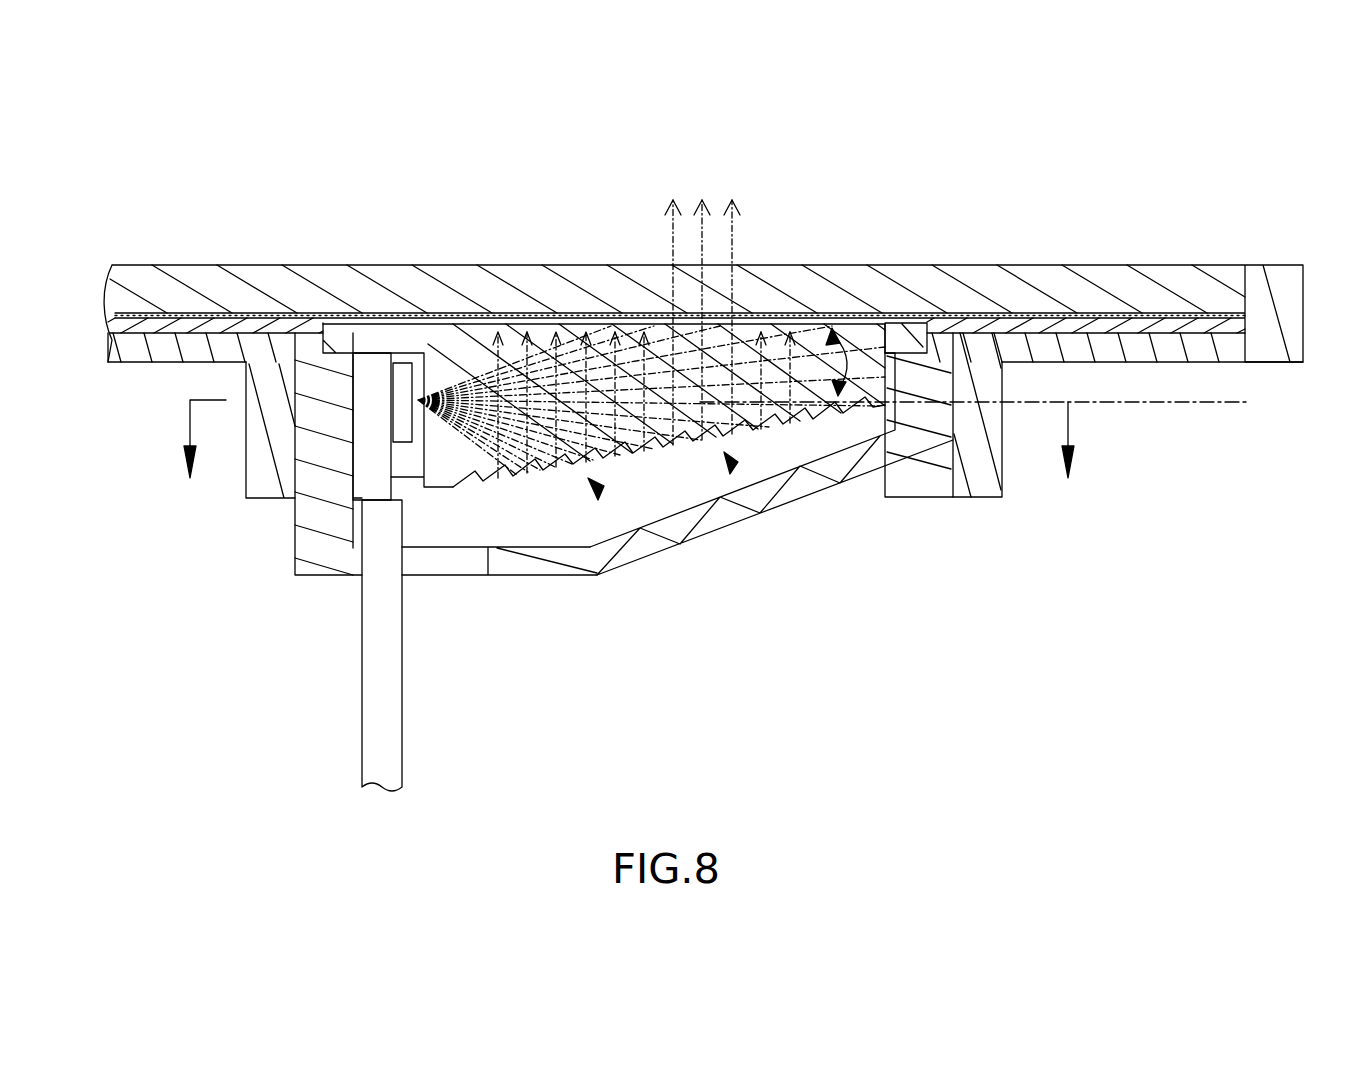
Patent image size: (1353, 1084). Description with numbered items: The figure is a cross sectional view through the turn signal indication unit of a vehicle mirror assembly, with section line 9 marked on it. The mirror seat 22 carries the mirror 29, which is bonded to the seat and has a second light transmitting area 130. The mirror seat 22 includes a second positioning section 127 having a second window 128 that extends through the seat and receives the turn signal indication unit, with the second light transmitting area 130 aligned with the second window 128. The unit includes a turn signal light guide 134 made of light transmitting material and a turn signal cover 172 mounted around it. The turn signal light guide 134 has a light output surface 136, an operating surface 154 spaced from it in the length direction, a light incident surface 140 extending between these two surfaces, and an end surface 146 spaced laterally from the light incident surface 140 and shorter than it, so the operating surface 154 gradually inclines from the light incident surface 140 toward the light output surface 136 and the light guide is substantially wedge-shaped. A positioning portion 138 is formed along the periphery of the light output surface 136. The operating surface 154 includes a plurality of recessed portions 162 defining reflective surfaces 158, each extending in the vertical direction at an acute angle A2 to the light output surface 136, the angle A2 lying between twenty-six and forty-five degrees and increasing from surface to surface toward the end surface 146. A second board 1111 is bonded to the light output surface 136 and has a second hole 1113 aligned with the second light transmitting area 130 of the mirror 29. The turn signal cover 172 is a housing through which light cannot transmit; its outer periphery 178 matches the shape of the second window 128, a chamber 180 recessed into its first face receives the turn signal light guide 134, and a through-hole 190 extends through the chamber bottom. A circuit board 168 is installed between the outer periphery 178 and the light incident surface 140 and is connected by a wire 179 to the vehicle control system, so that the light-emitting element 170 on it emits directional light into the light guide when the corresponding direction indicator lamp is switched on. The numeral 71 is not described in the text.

The mirror 29 is at (1150, 282).
The second board 1111 is at (297, 316).
The mirror seat 22 is at (130, 340).
The rear plate 71 is at (1197, 404).
The second positioning section 127 is at (258, 482).
The outer periphery 178 is at (312, 578).
The wire 179 is at (392, 755).
The through-hole 190 is at (360, 580).
The circuit board 168 is at (362, 355).
The light-emitting element 170 is at (400, 368).
The light incident surface 140 is at (425, 482).
The turn signal light guide 134 is at (592, 500).
The second hole 1113 is at (720, 322).
The second light transmitting area 130 is at (655, 322).
The light output surface 136 is at (800, 322).
The positioning portion 138 is at (905, 326).
The acute angle A2 is at (848, 340).
The chamber 180 is at (548, 512).
The turn signal cover 172 is at (667, 500).
The operating surface 154 is at (733, 470).
The reflective surfaces 158 is at (706, 500).
The recessed portions 162 is at (792, 488).
The second window 128 is at (918, 482).
The end surface 146 is at (960, 443).
The section line 9 is at (628, 460).